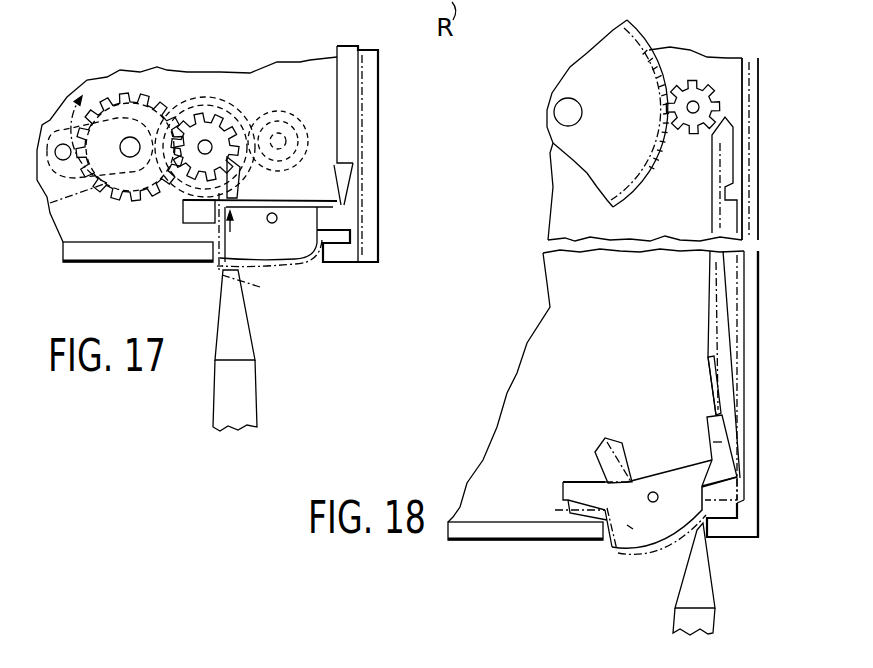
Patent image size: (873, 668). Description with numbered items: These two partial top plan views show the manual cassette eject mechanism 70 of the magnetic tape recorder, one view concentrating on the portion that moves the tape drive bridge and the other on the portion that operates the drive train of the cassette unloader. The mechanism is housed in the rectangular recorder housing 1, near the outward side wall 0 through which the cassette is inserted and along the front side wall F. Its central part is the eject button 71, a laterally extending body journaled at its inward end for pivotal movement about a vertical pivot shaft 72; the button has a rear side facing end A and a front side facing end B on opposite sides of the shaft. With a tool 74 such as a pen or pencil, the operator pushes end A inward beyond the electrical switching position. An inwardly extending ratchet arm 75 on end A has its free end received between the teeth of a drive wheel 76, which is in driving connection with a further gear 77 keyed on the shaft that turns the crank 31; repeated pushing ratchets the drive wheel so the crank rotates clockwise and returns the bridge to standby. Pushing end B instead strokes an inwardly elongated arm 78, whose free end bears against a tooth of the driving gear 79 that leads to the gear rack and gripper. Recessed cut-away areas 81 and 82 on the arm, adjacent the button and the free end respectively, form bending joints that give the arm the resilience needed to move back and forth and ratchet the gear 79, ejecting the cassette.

In FIG. 17, the outward side wall 0 is at (120, 270).
In FIG. 18, the outward side wall 0 is at (505, 548).
In FIG. 18, the recorder housing 1 is at (770, 438).
In FIG. 17, the crank 31 is at (50, 212).
In FIG. 17, the mechanism 70 is at (158, 217).
In FIG. 18, the mechanism 70 is at (690, 445).
In FIG. 17, the eject button 71 is at (297, 267).
In FIG. 18, the eject button 71 is at (653, 547).
In FIG. 17, the pivot shaft 72 is at (268, 221).
In FIG. 18, the pivot shaft 72 is at (557, 512).
In FIG. 17, the tool 74 is at (265, 346).
In FIG. 18, the tool 74 is at (725, 577).
In FIG. 17, the ratchet arm 75 is at (233, 197).
In FIG. 18, the ratchet arm 75 is at (597, 453).
In FIG. 17, the drive wheel 76 is at (204, 118).
In FIG. 17, the gear 77 is at (123, 110).
In FIG. 17, the elongated arm 78 is at (330, 82).
In FIG. 18, the elongated arm 78 is at (700, 318).
In FIG. 18, the driving gear 79 is at (700, 85).
In FIG. 18, the cut-away area 81 is at (710, 395).
In FIG. 18, the cut-away area 82 is at (728, 188).
In FIG. 17, the rear side facing end A is at (213, 270).
In FIG. 18, the rear side facing end A is at (625, 532).
In FIG. 17, the front side facing end B is at (297, 251).
In FIG. 18, the front side facing end B is at (693, 530).
In FIG. 17, the front side wall F is at (385, 112).
In FIG. 18, the front side wall F is at (768, 95).